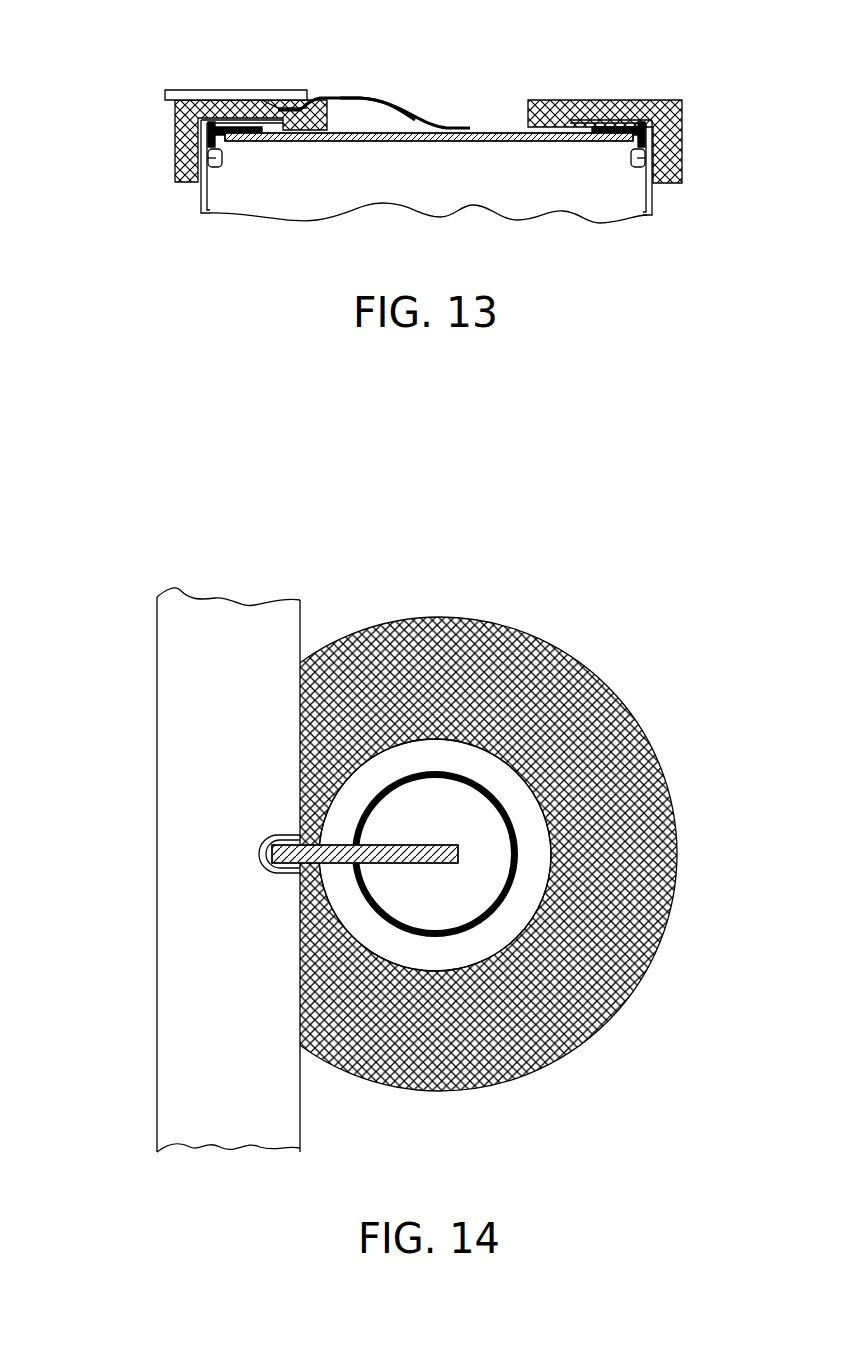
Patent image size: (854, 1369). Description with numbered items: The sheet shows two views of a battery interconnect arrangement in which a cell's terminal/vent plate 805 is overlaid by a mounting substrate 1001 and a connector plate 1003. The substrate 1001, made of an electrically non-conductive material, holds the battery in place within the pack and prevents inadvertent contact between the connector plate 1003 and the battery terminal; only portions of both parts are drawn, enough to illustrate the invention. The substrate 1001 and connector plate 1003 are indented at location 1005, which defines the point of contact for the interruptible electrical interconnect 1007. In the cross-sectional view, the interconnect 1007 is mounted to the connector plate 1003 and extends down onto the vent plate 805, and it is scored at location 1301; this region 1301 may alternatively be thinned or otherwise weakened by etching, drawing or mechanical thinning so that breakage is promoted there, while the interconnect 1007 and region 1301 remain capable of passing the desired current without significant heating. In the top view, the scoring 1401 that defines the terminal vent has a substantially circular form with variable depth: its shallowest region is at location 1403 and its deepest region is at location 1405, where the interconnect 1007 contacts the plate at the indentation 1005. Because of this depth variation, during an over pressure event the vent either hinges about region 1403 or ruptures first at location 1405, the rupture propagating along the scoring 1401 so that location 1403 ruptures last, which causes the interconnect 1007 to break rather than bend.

In FIG. 13, the terminal/vent plate 805 is at (300, 143).
In FIG. 13, the mounting substrate 1001 is at (173, 126).
In FIG. 14, the mounting substrate 1001 is at (453, 1037).
In FIG. 13, the connector plate 1003 is at (203, 95).
In FIG. 14, the connector plate 1003 is at (230, 1117).
In FIG. 14, the indented location 1005 is at (284, 824).
In FIG. 13, the interruptible electrical interconnect 1007 is at (412, 118).
In FIG. 14, the interruptible electrical interconnect 1007 is at (357, 856).
In FIG. 13, the scored location 1301 is at (363, 80).
In FIG. 14, the scoring 1401 is at (483, 784).
In FIG. 14, the shallowest scoring location 1403 is at (536, 853).
In FIG. 14, the deepest scoring location 1405 is at (343, 830).